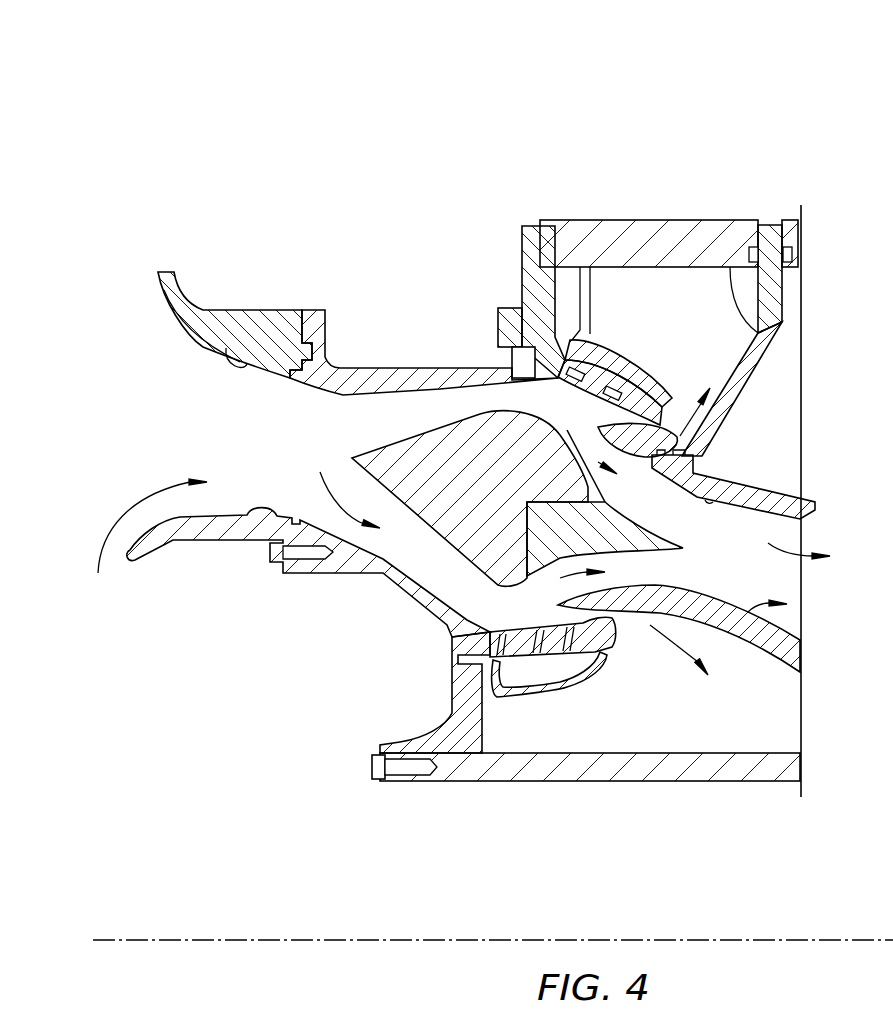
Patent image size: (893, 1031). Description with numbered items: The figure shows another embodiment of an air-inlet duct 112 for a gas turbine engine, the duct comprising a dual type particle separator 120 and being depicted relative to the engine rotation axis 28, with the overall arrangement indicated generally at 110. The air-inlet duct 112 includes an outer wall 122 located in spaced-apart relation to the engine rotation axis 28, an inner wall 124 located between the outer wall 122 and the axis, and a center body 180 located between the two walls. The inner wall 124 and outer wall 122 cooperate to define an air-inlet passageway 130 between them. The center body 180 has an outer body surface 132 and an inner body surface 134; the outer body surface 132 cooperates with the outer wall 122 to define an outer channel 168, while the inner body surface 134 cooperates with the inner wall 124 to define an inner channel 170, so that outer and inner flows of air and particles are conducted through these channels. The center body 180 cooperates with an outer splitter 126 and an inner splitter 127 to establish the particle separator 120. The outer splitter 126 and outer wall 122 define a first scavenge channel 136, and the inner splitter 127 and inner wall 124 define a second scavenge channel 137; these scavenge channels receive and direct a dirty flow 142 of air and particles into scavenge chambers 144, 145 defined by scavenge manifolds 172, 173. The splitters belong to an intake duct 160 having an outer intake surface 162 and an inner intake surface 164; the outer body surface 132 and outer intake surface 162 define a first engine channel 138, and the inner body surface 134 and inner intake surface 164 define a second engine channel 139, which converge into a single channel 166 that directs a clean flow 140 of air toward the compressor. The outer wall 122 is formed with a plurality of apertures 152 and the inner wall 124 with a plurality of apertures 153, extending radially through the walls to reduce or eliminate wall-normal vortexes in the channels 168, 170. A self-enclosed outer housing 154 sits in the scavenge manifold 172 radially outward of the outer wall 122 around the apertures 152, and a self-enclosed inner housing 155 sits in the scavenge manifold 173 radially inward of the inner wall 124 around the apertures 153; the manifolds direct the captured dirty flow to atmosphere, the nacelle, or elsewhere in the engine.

The engine rotation axis 28 is at (198, 940).
The turbine section 110 is at (766, 101).
The air-inlet duct 112 is at (500, 176).
The particle separator 120 is at (443, 344).
The outer wall 122 is at (228, 352).
The inner wall 124 is at (257, 509).
The outer splitter 126 is at (632, 480).
The inner splitter 127 is at (620, 572).
The air-inlet passageway 130 is at (143, 541).
The outer body surface 132 is at (428, 432).
The inner body surface 134 is at (418, 579).
The first scavenge channel 136 is at (624, 428).
The second scavenge channel 137 is at (580, 614).
The first engine channel 138 is at (592, 452).
The second engine channel 139 is at (560, 595).
The clean flow 140 is at (800, 553).
The dirty flow 142 is at (712, 420).
The scavenge chamber 144 is at (654, 277).
The scavenge chamber 145 is at (655, 760).
The apertures 152 is at (576, 318).
The apertures 153 is at (517, 676).
The outer housing 154 is at (515, 233).
The inner housing 155 is at (508, 722).
The intake duct 160 is at (777, 470).
The outer intake surface 162 is at (727, 500).
The inner intake surface 164 is at (688, 592).
The single channel 166 is at (748, 620).
The outer channel 168 is at (352, 409).
The inner channel 170 is at (340, 487).
The scavenge manifold 172 is at (725, 198).
The scavenge manifold 173 is at (757, 813).
The center body 180 is at (502, 450).